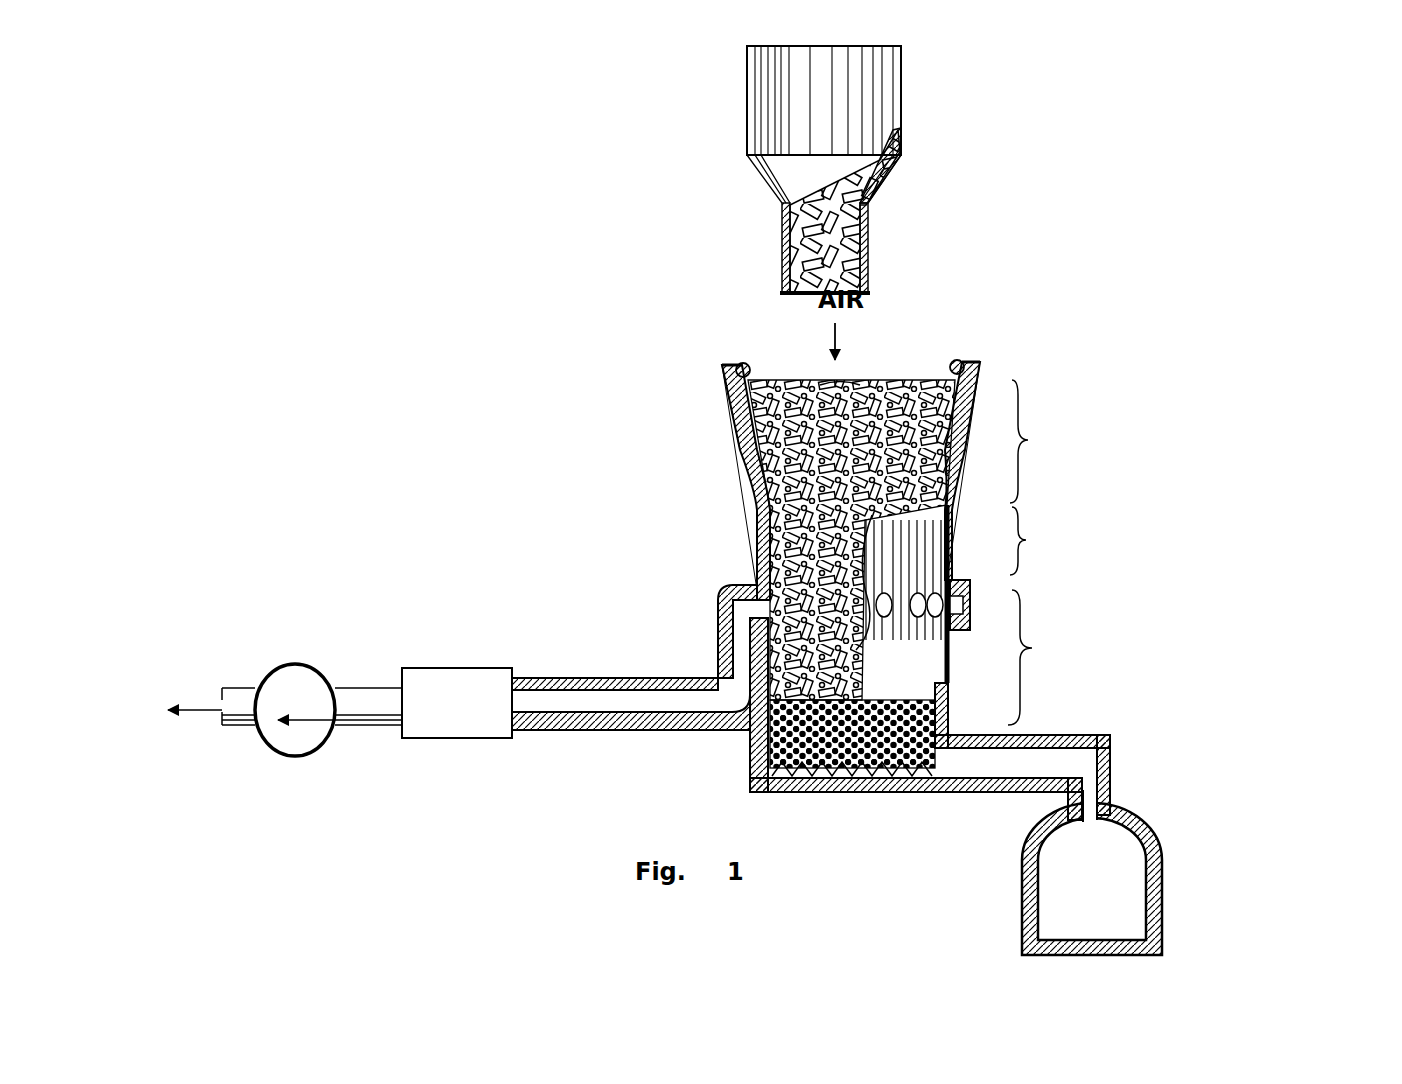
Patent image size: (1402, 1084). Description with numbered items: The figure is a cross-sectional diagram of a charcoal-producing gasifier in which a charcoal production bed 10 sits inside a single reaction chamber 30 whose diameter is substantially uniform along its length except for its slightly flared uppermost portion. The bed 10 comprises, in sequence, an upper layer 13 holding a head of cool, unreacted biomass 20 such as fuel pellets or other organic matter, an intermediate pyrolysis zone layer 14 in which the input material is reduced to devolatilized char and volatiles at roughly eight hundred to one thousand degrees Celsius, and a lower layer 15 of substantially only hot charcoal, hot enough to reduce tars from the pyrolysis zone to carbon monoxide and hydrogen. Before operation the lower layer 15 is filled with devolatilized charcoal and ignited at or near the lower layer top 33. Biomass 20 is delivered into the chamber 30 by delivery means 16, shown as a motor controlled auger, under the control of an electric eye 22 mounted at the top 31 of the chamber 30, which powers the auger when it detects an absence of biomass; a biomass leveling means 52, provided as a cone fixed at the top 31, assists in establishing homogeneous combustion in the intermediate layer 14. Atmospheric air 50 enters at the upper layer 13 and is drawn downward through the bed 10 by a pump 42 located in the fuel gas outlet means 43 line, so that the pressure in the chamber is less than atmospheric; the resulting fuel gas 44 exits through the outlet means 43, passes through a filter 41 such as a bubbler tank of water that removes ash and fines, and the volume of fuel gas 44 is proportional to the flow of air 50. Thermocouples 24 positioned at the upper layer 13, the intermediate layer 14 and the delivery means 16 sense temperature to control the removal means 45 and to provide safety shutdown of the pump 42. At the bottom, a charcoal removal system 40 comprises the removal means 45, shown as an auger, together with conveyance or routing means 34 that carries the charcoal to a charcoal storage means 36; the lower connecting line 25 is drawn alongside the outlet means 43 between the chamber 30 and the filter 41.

The charcoal production bed 10 is at (752, 503).
The upper layer 13 is at (1028, 440).
The intermediate pyrolysis zone layer 14 is at (1026, 540).
The lower layer 15 is at (1020, 617).
The delivery means 16 is at (900, 128).
The biomass 20 is at (862, 298).
The electric eye 22 is at (745, 364).
The thermocouple 24 is at (782, 272).
The lower pipe 25 is at (752, 720).
The reaction chamber 30 is at (730, 440).
The top 31 is at (720, 376).
The lower layer top 33 is at (947, 577).
The conveyance or routing means 34 is at (1078, 735).
The charcoal storage means 36 is at (1150, 822).
The charcoal removal system 40 is at (1195, 758).
The filter 41 is at (452, 742).
The pump 42 is at (285, 755).
The outlet means 43 is at (625, 680).
The fuel gas 44 is at (195, 713).
The removal means 45 is at (762, 758).
The air 50 is at (835, 323).
The biomass leveling means 52 is at (838, 382).